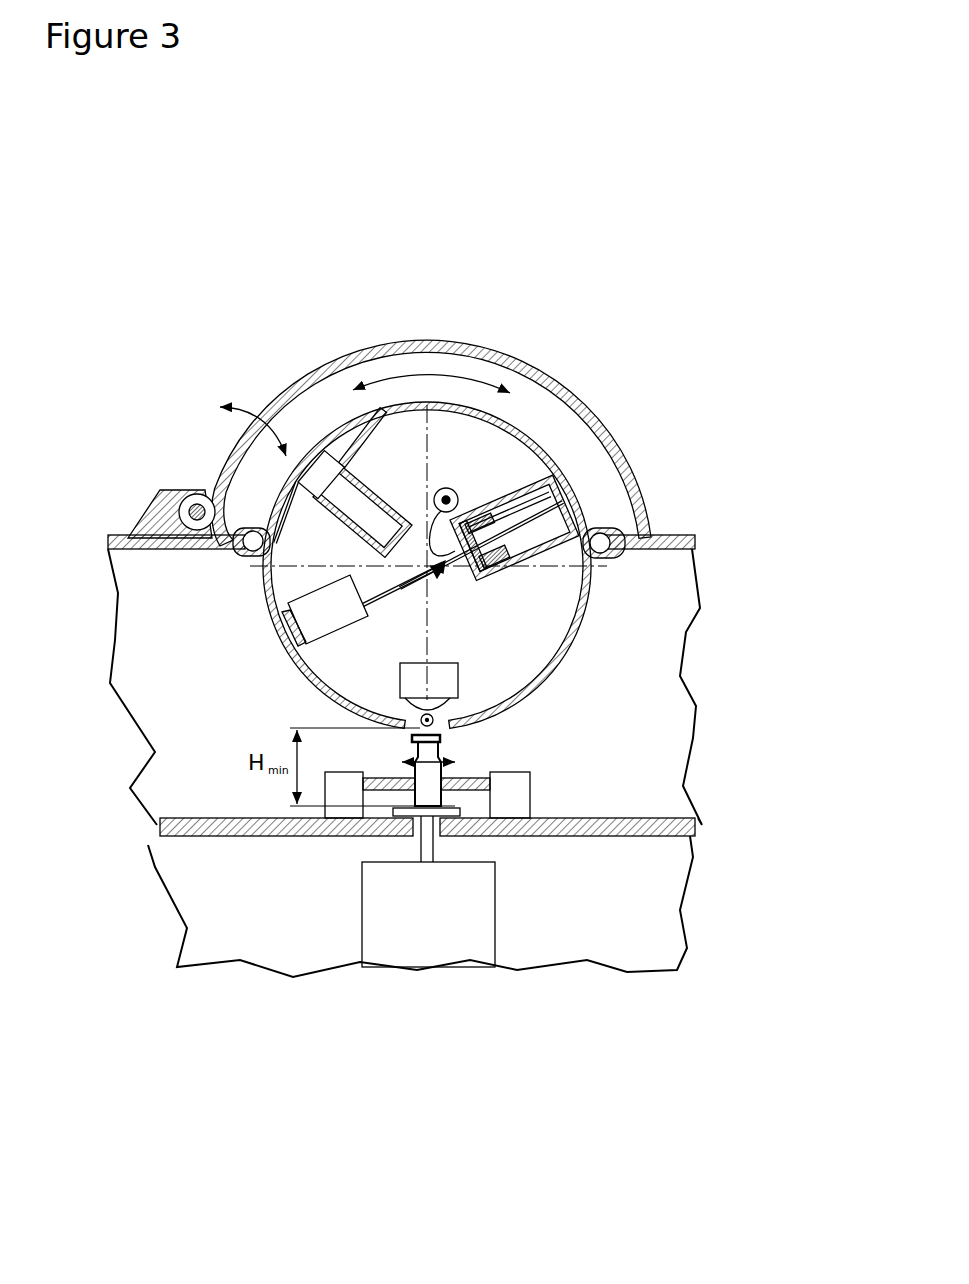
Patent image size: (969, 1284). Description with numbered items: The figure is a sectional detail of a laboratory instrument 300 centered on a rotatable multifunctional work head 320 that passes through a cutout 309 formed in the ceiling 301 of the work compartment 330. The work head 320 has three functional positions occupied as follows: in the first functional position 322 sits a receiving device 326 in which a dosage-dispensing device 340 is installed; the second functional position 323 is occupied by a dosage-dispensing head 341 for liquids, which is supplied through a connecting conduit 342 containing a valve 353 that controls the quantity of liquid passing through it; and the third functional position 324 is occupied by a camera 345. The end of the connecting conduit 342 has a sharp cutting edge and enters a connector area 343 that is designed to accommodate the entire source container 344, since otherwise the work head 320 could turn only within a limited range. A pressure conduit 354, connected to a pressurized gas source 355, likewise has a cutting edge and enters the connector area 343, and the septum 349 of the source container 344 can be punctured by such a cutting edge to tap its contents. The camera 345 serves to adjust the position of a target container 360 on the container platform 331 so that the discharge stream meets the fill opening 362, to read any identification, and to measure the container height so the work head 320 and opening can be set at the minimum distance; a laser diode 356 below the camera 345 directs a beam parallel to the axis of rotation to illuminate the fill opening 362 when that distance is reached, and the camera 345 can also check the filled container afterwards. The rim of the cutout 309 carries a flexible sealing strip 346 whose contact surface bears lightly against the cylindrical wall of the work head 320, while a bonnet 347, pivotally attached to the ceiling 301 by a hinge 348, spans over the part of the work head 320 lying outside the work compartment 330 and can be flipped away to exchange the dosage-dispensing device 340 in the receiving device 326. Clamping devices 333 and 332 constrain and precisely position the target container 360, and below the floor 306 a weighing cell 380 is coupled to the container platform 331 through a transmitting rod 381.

The laboratory instrument 300 is at (563, 290).
The ceiling 301 is at (469, 529).
The floor 306 is at (228, 830).
The cutout 309 is at (264, 420).
The multifunctional work head 320 is at (449, 403).
The first functional position 322 is at (159, 351).
The second functional position 323 is at (142, 613).
The third functional position 324 is at (408, 733).
The receiving device 326 is at (373, 478).
The work compartment 330 is at (602, 677).
The container platform 331 is at (597, 783).
The clamping device 332 is at (612, 812).
The clamping device 333 is at (337, 815).
The dosage-dispensing device 340 is at (321, 466).
The dosage-dispensing head 341 is at (227, 602).
The connecting conduit 342 is at (615, 590).
The connector area 343 is at (678, 583).
The source container 344 is at (640, 438).
The camera 345 is at (239, 672).
The sealing strip 346 is at (118, 459).
The bonnet 347 is at (485, 352).
The hinge 348 is at (157, 497).
The septum 349 is at (649, 491).
The valve 353 is at (650, 596).
The pressure conduit 354 is at (645, 464).
The pressurized gas source 355 is at (579, 359).
The laser diode 356 is at (227, 692).
The target container 360 is at (621, 761).
The fill opening 362 is at (616, 723).
The weighing cell 380 is at (405, 925).
The transmitting rod 381 is at (626, 849).